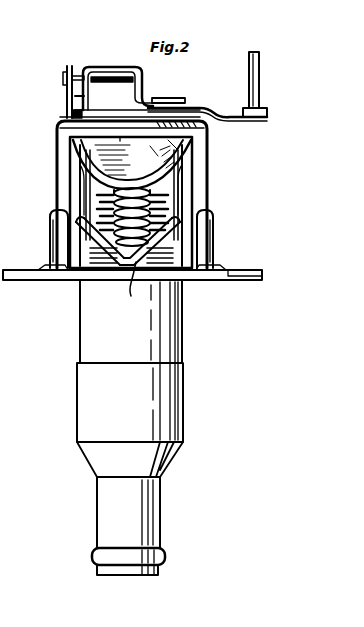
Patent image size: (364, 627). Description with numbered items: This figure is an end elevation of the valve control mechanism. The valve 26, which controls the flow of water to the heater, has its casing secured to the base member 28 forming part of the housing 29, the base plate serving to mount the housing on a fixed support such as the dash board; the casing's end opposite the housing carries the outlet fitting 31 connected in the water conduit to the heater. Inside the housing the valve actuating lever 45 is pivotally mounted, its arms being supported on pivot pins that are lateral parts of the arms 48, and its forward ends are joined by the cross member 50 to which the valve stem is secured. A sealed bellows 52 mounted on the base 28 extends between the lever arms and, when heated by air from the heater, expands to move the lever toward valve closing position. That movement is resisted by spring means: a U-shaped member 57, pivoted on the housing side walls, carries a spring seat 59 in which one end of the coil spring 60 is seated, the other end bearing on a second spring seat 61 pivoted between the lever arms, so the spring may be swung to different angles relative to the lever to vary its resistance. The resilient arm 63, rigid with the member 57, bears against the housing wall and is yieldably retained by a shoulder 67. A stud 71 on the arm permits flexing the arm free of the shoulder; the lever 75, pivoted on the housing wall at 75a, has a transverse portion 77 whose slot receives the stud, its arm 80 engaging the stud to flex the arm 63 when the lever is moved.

The valve 26 is at (86, 342).
The base member 28 is at (232, 282).
The housing 29 is at (200, 188).
The outlet fitting 31 is at (106, 510).
The lever 45 is at (80, 237).
The arms 48 is at (50, 224).
The cross member 50 is at (132, 288).
The bellows 52 is at (162, 201).
The U-shaped member 57 is at (78, 146).
The spring seat 59 is at (134, 161).
The coil spring 60 is at (102, 198).
The second spring seat 61 is at (160, 243).
The arm 63 is at (73, 64).
The shoulder 67 is at (72, 114).
The stud 71 is at (104, 90).
The lever 75 is at (219, 117).
The pivot 75a is at (174, 97).
The transverse portion 77 is at (94, 66).
The arm 80 is at (76, 98).